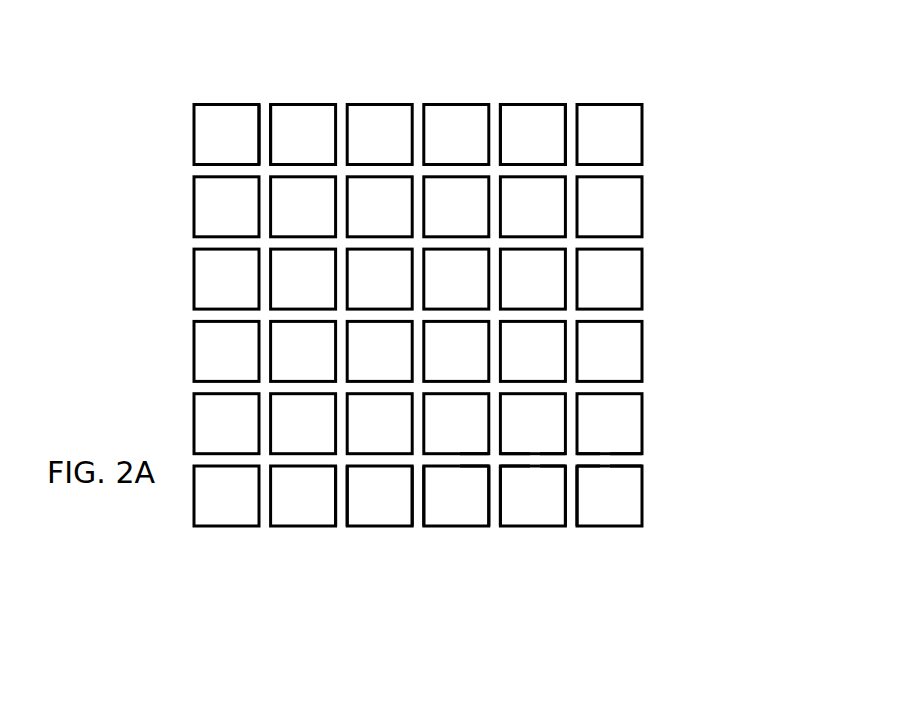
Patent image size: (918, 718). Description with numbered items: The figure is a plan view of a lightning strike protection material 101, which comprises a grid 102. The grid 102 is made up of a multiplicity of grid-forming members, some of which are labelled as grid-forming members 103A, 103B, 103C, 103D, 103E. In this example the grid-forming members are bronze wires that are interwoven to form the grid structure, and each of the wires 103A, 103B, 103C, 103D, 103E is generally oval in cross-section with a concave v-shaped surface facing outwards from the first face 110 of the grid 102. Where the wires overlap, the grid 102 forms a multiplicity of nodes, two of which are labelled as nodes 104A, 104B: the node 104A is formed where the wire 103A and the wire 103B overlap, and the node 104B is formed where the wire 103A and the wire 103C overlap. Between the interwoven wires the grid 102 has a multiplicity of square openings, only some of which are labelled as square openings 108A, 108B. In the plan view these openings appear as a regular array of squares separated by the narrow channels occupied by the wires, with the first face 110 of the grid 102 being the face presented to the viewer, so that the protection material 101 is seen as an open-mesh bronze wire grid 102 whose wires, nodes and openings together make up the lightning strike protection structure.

The lightning strike protection material 101 is at (160, 262).
The grid 102 is at (291, 85).
The first face 110 is at (532, 116).
The square opening 108A is at (610, 418).
The square opening 108B is at (610, 500).
The node 104A is at (569, 457).
The node 104B is at (497, 460).
The grid-forming member 103A is at (637, 458).
The grid-forming member 103B is at (570, 518).
The grid-forming member 103C is at (495, 518).
The grid-forming member 103D is at (418, 518).
The grid-forming member 103E is at (342, 518).